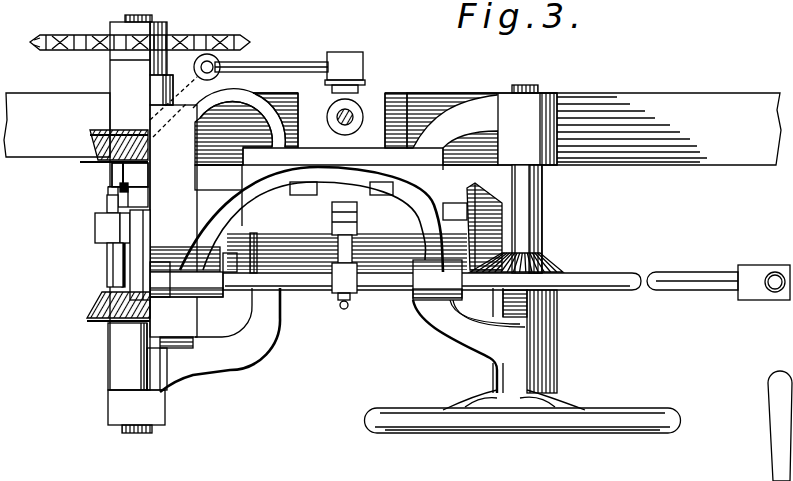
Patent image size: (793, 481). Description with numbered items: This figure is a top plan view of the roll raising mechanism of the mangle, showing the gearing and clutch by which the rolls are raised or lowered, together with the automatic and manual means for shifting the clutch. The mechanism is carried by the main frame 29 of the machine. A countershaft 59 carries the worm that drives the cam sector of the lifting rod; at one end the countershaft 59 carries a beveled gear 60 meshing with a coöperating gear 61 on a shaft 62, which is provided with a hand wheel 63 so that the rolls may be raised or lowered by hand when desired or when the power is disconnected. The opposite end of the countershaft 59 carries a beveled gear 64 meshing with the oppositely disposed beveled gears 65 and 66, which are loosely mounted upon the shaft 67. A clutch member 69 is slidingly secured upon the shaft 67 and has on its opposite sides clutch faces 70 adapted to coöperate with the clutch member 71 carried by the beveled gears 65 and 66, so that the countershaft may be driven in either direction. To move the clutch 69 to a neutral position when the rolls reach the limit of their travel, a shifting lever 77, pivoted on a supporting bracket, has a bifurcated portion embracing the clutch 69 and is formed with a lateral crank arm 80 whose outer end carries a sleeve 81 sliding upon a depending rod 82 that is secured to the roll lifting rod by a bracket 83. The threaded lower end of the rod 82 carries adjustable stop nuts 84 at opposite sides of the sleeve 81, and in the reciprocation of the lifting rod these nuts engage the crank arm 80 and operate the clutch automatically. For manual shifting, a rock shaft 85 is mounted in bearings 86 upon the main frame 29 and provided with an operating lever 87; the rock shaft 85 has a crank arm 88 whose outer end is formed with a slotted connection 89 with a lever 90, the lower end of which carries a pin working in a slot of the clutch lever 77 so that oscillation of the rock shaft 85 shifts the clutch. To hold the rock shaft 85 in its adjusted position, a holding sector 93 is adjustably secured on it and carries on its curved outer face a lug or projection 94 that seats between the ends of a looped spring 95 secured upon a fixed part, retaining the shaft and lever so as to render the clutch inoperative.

The main frame 29 is at (392, 129).
The countershaft 59 is at (440, 229).
The beveled gear 60 is at (503, 206).
The coöperating gear 61 is at (557, 267).
The shaft 62 is at (531, 224).
The hand wheel 63 is at (642, 410).
The beveled gear 64 is at (48, 50).
The beveled gear 65 is at (105, 157).
The beveled gear 66 is at (90, 298).
The shaft 67 is at (143, 433).
The clutch member 69 is at (107, 209).
The clutch faces 70 is at (110, 197).
The clutch member 71 is at (107, 272).
The shifting lever 77 is at (95, 232).
The lateral crank arm 80 is at (150, 113).
The sleeve 81 is at (252, 37).
The depending rod 82 is at (288, 63).
The bracket 83 is at (349, 88).
The adjustable stop nuts 84 is at (350, 114).
The rock shaft 85 is at (678, 277).
The bearings 86 is at (213, 298).
The operating lever 87 is at (752, 265).
The crank arm 88 is at (145, 265).
The slotted connection 89 is at (168, 324).
The lever 90 is at (137, 212).
The holding sector 93 is at (337, 300).
The lug or projection 94 is at (350, 225).
The looped spring 95 is at (333, 208).